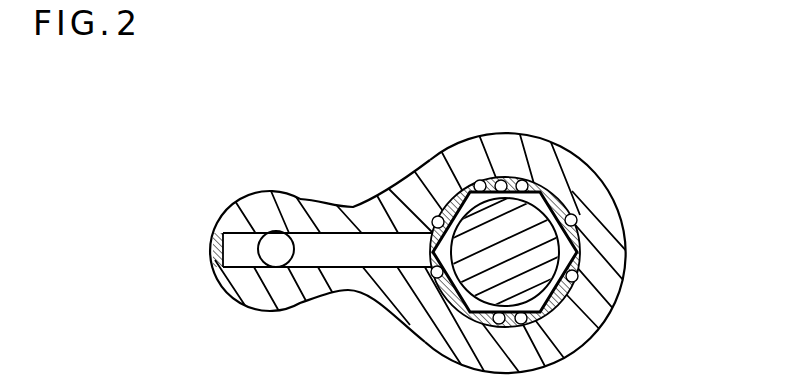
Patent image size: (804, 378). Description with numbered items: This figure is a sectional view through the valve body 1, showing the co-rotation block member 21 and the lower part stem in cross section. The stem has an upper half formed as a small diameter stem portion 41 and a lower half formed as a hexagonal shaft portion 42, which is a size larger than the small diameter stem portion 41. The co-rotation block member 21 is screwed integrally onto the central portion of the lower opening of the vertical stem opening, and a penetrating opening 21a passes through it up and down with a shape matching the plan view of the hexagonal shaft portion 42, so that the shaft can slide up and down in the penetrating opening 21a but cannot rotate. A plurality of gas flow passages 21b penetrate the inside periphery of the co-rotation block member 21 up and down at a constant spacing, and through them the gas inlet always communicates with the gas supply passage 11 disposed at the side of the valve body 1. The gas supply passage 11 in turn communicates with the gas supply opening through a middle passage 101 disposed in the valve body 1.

The valve body 1 is at (538, 152).
The gas supply passage 11 is at (350, 252).
The middle passage 101 is at (277, 246).
The co-rotation block member 21 is at (573, 267).
The penetrating opening 21a is at (553, 202).
The gas flow passages 21b is at (565, 222).
The small diameter stem portion 41 is at (490, 219).
The hexagonal shaft portion 42 is at (565, 340).